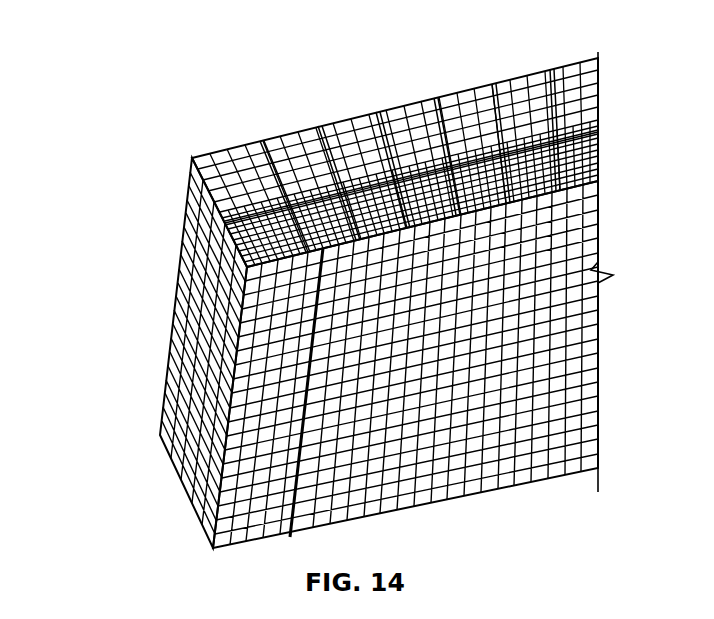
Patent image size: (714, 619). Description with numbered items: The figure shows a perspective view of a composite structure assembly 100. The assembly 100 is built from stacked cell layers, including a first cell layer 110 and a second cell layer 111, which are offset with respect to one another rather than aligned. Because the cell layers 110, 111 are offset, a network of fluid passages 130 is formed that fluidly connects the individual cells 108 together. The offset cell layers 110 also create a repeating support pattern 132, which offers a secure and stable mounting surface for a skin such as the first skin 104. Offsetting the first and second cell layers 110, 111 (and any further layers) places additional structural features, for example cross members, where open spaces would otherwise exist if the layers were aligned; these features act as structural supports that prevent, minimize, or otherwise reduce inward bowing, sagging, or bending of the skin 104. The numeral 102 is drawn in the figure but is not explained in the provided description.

The composite structure assembly 100 is at (168, 102).
The basket 102 is at (541, 132).
The first skin 104 is at (472, 370).
The cells 108 is at (325, 145).
The first cell layer 110 is at (415, 172).
The second cell layer 111 is at (453, 138).
The fluid passages 130 is at (298, 200).
The repeating support pattern 132 is at (242, 332).